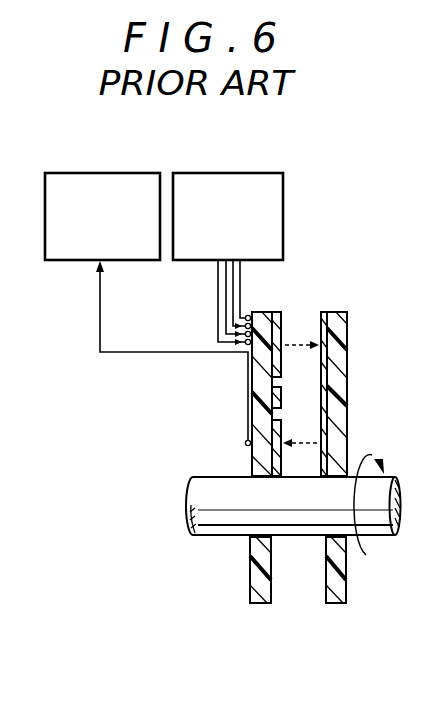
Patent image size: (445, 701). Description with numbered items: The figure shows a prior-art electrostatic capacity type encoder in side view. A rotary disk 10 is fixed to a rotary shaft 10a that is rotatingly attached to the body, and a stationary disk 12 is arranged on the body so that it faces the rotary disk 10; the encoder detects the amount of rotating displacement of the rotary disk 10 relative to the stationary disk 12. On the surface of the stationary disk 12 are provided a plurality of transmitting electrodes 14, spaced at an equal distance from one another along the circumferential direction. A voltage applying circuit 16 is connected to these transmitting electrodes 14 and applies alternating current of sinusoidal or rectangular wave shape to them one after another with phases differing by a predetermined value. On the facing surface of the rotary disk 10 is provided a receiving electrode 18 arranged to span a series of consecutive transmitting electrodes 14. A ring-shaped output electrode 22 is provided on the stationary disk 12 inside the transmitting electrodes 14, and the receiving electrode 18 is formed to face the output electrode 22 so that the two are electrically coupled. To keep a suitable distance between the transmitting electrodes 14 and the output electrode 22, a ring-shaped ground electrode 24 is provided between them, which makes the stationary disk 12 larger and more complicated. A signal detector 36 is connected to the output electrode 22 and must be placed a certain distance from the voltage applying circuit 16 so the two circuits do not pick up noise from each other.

The signal detector 36 is at (118, 172).
The voltage applying circuit 16 is at (230, 172).
The transmitting electrodes 14 is at (277, 312).
The receiving electrode 18 is at (321, 330).
The ground electrode 24 is at (281, 390).
The output electrode 22 is at (281, 429).
The stationary disk 12 is at (258, 603).
The rotary disk 10 is at (334, 603).
The rotary shaft 10a is at (212, 537).